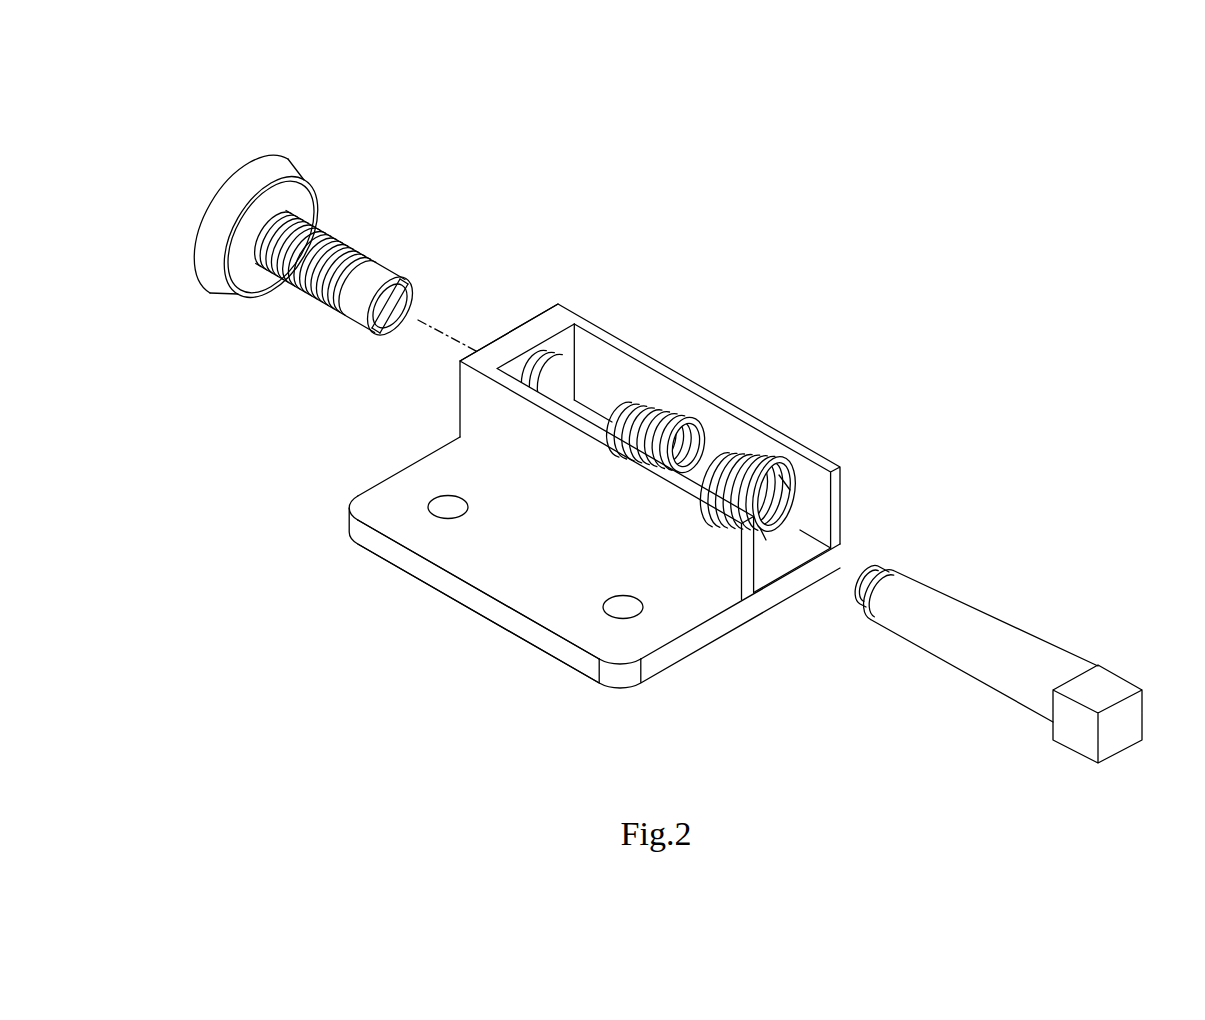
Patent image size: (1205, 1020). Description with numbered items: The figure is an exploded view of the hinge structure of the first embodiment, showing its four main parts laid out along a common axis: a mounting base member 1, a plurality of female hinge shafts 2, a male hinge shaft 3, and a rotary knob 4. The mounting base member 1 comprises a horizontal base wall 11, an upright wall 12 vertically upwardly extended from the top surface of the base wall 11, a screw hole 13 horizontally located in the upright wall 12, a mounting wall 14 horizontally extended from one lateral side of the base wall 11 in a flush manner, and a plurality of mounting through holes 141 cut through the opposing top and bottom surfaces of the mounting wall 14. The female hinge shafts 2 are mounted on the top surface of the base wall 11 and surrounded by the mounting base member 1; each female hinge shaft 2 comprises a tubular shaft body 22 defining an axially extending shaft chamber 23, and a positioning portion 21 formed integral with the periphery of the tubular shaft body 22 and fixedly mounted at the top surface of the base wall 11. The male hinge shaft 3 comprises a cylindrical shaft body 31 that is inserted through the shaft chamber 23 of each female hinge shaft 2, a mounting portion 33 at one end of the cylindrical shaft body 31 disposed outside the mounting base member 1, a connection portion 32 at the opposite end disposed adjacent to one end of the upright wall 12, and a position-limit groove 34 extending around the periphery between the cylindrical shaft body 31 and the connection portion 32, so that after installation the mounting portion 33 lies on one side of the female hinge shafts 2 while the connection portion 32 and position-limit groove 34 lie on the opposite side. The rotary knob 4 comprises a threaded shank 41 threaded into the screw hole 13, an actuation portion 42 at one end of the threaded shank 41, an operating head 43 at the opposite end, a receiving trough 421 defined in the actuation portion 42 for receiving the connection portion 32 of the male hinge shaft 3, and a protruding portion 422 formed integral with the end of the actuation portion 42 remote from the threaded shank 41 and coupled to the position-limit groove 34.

The mounting base member 1 is at (595, 483).
The base wall 11 is at (790, 567).
The upright wall 12 is at (530, 330).
The screw hole 13 is at (550, 370).
The mounting wall 14 is at (557, 643).
The mounting through hole 141 is at (457, 513).
The female hinge shaft 2 is at (747, 476).
The positioning portion 21 is at (763, 545).
The tubular shaft body 22 is at (678, 418).
The shaft chamber 23 is at (787, 497).
The male hinge shaft 3 is at (986, 643).
The cylindrical shaft body 31 is at (983, 620).
The connection portion 32 is at (880, 563).
The mounting portion 33 is at (1110, 683).
The position-limit groove 34 is at (870, 600).
The rotary knob 4 is at (305, 241).
The threaded shank 41 is at (330, 227).
The actuation portion 42 is at (372, 308).
The receiving trough 421 is at (383, 266).
The protruding portion 422 is at (402, 287).
The operating head 43 is at (207, 202).